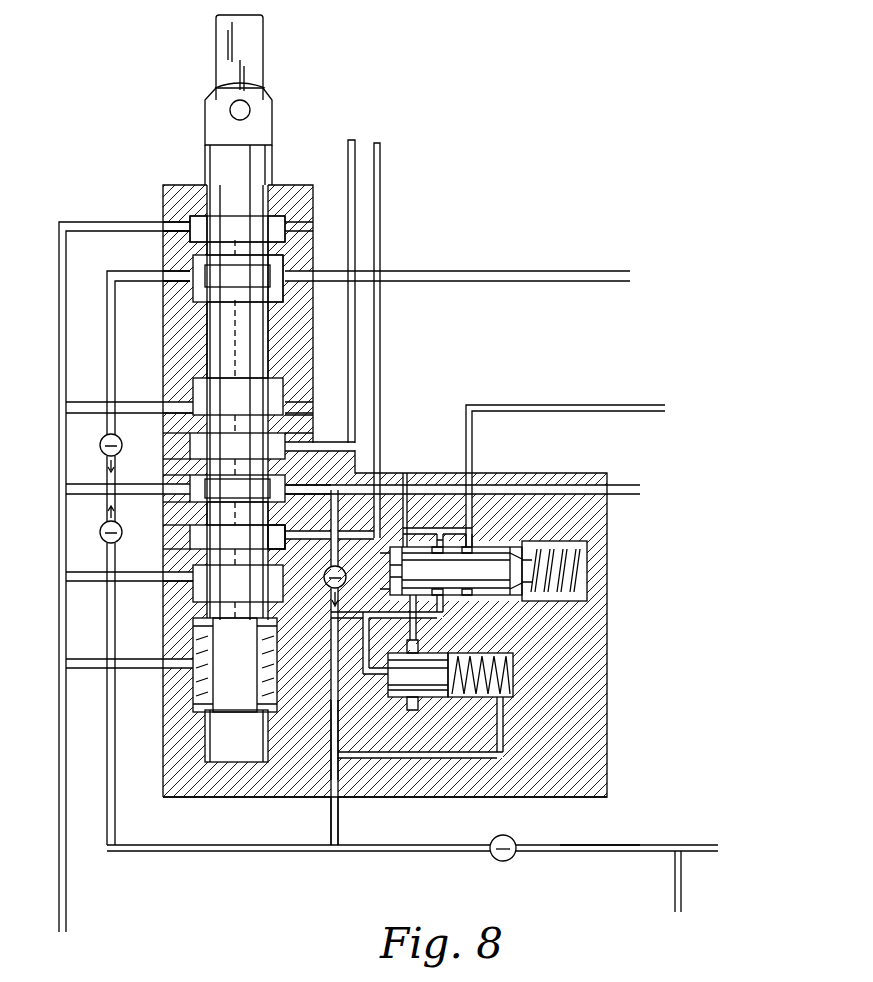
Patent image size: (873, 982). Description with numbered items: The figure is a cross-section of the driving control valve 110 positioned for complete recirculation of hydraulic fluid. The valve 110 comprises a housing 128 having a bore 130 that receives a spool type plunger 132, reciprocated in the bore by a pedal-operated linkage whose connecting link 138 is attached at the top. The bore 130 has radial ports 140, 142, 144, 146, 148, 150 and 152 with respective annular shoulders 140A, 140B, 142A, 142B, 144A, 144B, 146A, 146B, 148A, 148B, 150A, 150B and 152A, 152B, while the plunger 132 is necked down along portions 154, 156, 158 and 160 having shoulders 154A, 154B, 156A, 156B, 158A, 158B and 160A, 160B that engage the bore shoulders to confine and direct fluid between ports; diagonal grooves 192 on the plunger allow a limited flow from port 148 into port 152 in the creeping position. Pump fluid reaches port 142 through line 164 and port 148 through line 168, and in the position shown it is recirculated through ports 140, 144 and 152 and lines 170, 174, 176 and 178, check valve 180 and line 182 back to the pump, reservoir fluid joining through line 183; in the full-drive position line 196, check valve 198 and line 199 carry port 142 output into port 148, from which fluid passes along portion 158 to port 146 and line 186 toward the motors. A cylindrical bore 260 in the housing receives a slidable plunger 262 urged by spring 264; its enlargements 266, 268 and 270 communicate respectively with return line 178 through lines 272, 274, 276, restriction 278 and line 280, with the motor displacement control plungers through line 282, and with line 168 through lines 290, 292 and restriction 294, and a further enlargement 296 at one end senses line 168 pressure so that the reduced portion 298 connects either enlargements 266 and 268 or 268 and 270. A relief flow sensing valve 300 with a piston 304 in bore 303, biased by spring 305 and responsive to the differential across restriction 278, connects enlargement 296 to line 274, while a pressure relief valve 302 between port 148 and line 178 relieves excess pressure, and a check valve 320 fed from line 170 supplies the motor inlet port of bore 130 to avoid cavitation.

The driving control valve 110 is at (190, 805).
The housing 128 is at (607, 760).
The bore 130 is at (207, 345).
The spool type plunger 132 is at (272, 170).
The connecting link 138 is at (265, 52).
The radial port 140 is at (288, 228).
The annular shoulder 140A is at (190, 224).
The annular shoulder 140B is at (190, 234).
The radial port 142 is at (290, 288).
The annular shoulder 142A is at (190, 275).
The annular shoulder 142B is at (190, 285).
The radial port 144 is at (288, 395).
The annular shoulder 144A is at (190, 405).
The annular shoulder 144B is at (190, 413).
The radial port 146 is at (237, 446).
The annular shoulder 146A is at (190, 437).
The annular shoulder 146B is at (190, 452).
The radial port 148 is at (190, 488).
The annular shoulder 148A is at (195, 478).
The annular shoulder 148B is at (195, 500).
The radial port 150 is at (274, 537).
The annular shoulder 150A is at (190, 530).
The annular shoulder 150B is at (190, 540).
The radial port 152 is at (322, 576).
The annular shoulder 152A is at (190, 576).
The annular shoulder 152B is at (190, 595).
The necked down portion 154 is at (237, 235).
The shoulder 154A is at (240, 216).
The shoulder 154B is at (275, 260).
The necked down portion 156 is at (238, 316).
The shoulder 156A is at (270, 300).
The shoulder 156B is at (238, 396).
The necked down portion 158 is at (237, 467).
The shoulder 158A is at (290, 420).
The shoulder 158B is at (275, 480).
The necked down portion 160 is at (237, 531).
The shoulder 160A is at (275, 525).
The shoulder 160B is at (238, 583).
The line 164 is at (555, 271).
The line 168 is at (640, 490).
The line 170 is at (68, 222).
The line 174 is at (100, 402).
The line 176 is at (95, 581).
The line 178 is at (245, 851).
The check valve 180 is at (505, 861).
The line 182 is at (672, 900).
The line 183 is at (595, 851).
The line 186 is at (380, 360).
The diagonal grooves 192 is at (237, 511).
The line 196 is at (107, 310).
The check valve 198 is at (99, 445).
The line 199 is at (114, 482).
The cylindrical bore 260 is at (530, 548).
The slidable plunger 262 is at (456, 571).
The spring 264 is at (590, 578).
The annular enlargement 266 is at (440, 542).
The annular enlargement 268 is at (443, 600).
The annular enlargement 270 is at (510, 598).
The line 272 is at (420, 620).
The line 274 is at (356, 678).
The line 276 is at (333, 675).
The restriction 278 is at (331, 730).
The line 280 is at (325, 820).
The line 282 is at (545, 411).
The line 290 is at (420, 530).
The line 292 is at (390, 560).
The restriction 294 is at (407, 520).
The enlargement 296 is at (380, 600).
The reduced portion 298 is at (472, 530).
The relief flow sensing valve 300 is at (435, 705).
The pressure relief valve 302 is at (280, 625).
The bore 303 is at (478, 705).
The piston 304 is at (407, 648).
The biasing spring 305 is at (513, 675).
The check valve 320 is at (99, 532).